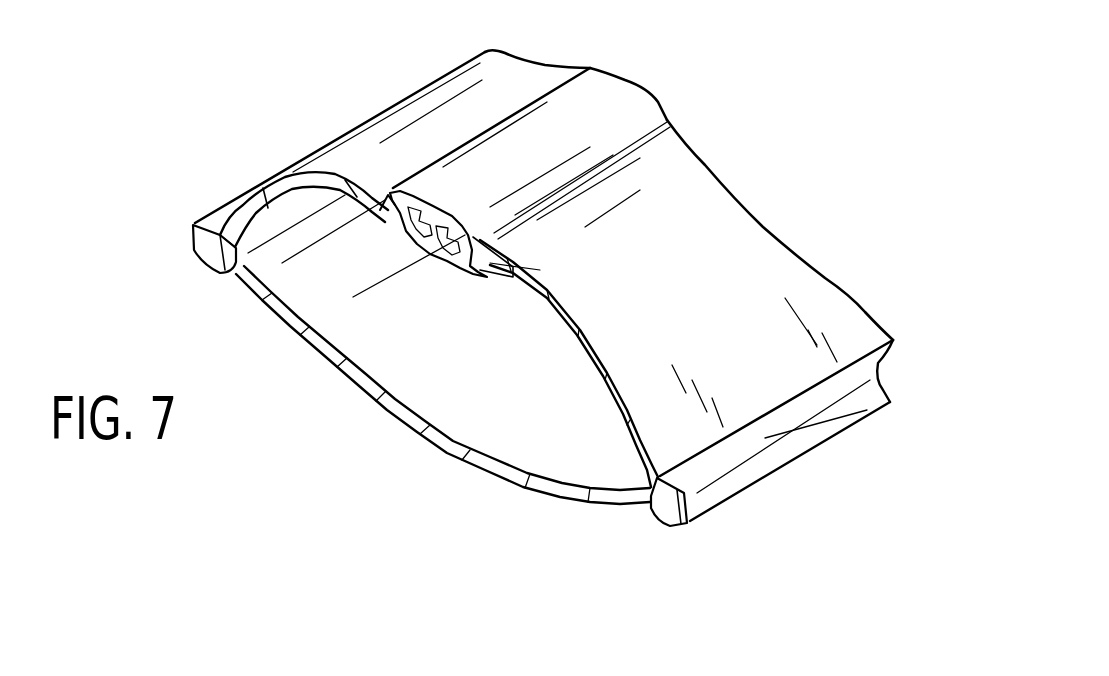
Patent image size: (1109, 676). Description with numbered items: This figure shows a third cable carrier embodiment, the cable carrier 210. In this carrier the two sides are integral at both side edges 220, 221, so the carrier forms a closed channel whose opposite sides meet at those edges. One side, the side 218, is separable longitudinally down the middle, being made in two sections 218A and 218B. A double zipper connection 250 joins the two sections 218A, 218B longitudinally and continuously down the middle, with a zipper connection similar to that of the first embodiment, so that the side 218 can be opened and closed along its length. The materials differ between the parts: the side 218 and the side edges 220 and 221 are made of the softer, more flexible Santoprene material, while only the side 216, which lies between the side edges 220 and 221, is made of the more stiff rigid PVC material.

The cable carrier 210 is at (241, 131).
The side 216 is at (342, 390).
The side 218 is at (366, 147).
The section 218A is at (468, 112).
The section 218B is at (752, 237).
The side edge 220 is at (193, 230).
The side edge 221 is at (732, 478).
The double zipper connection 250 is at (631, 74).